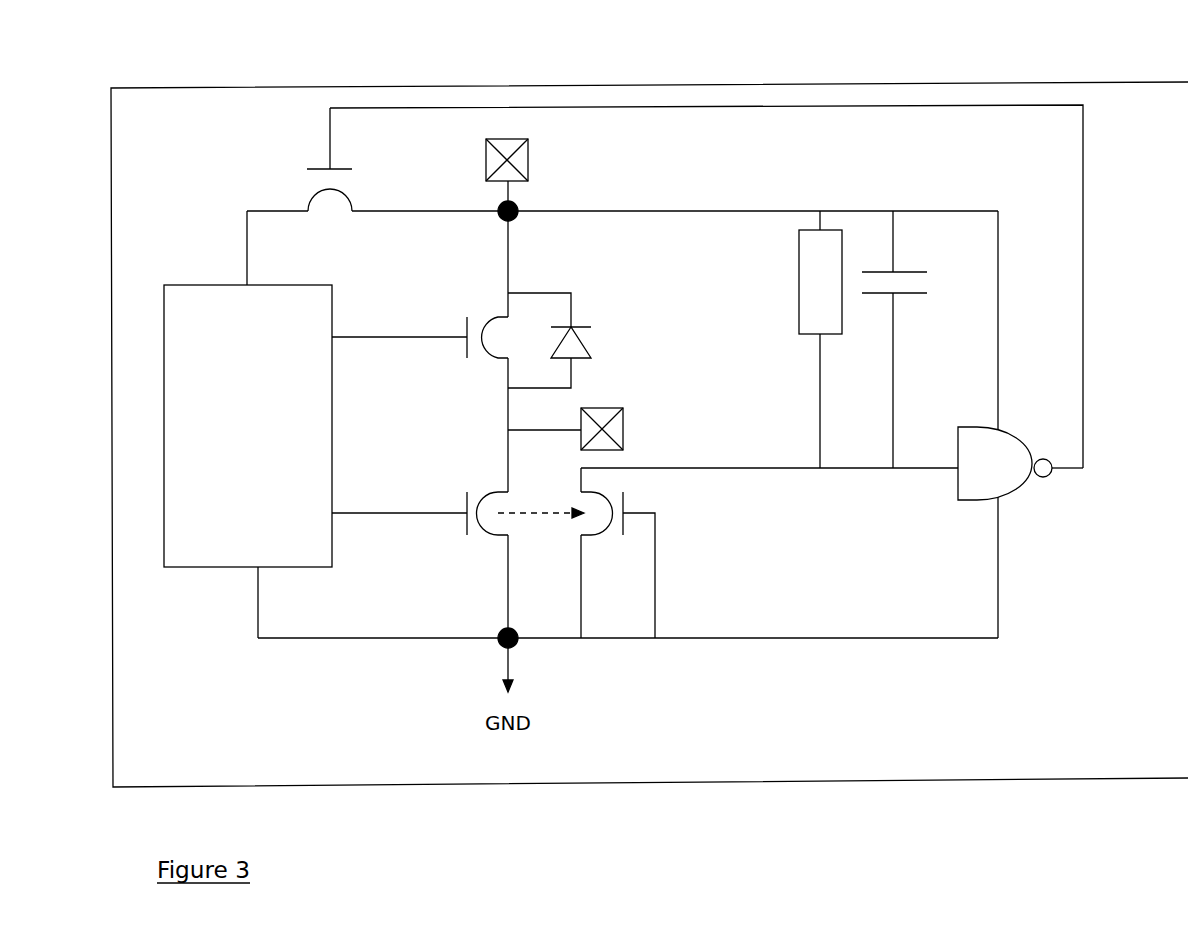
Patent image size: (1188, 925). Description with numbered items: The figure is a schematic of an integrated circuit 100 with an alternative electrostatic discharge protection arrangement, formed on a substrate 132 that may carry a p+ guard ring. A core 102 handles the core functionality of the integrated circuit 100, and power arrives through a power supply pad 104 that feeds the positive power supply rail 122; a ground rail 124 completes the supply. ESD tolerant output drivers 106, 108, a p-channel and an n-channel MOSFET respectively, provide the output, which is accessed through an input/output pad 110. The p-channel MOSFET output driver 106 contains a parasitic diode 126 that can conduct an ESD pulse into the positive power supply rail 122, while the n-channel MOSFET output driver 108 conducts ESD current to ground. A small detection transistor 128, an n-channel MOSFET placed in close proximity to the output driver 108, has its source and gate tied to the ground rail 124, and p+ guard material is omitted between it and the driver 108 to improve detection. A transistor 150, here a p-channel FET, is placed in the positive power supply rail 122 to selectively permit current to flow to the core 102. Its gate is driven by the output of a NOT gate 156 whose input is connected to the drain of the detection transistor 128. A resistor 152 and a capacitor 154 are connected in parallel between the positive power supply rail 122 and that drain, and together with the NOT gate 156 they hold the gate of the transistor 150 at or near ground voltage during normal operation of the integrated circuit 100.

The integrated circuit 100 is at (1096, 68).
The core 102 is at (320, 555).
The power supply pad 104 is at (507, 150).
The p-channel MOSFET output driver 106 is at (498, 338).
The n-channel MOSFET output driver 108 is at (497, 502).
The input/output pad 110 is at (612, 430).
The positive power supply rail 122 is at (581, 210).
The ground rail 124 is at (342, 640).
The parasitic diode 126 is at (582, 348).
The detection transistor 128 is at (603, 543).
The substrate 132 is at (413, 87).
The transistor 150 is at (330, 213).
The resistor 152 is at (830, 325).
The capacitor 154 is at (905, 295).
The NOT gate 156 is at (1010, 467).